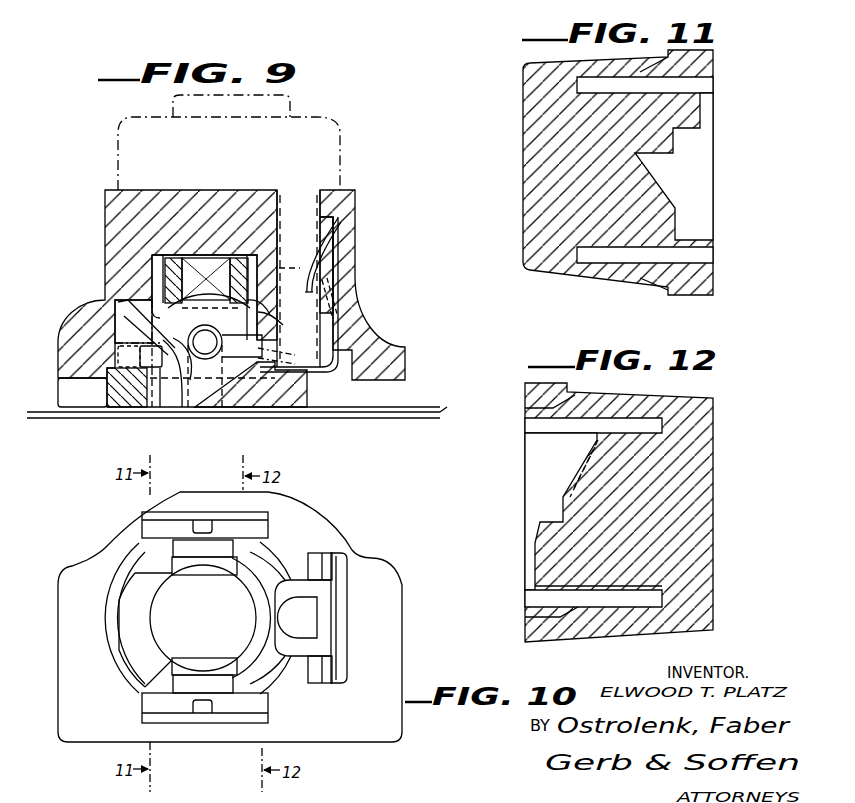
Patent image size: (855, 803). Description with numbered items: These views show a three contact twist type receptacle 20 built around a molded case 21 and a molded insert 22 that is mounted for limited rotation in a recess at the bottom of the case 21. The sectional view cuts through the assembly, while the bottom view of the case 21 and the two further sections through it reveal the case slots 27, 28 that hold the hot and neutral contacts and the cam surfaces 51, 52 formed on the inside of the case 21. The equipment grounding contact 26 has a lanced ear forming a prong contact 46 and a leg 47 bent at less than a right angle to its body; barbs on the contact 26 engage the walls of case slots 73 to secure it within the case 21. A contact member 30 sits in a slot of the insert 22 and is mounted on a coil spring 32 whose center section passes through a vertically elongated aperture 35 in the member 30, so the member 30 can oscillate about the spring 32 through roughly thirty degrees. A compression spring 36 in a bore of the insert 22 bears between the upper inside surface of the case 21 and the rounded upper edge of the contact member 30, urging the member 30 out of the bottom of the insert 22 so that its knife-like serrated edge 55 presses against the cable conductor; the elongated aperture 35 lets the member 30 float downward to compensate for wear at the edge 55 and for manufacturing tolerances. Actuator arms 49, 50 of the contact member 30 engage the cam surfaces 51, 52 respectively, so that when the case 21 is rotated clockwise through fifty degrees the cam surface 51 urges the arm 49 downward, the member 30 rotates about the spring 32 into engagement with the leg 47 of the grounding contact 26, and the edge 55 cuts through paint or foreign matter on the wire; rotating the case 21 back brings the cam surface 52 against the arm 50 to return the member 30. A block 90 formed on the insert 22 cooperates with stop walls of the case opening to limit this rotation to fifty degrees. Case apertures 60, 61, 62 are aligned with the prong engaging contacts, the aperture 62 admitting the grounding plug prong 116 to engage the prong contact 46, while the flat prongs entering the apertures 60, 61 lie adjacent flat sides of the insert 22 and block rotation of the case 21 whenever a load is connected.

In FIG. 9, the three contact twist type receptacle 20 is at (357, 241).
In FIG. 10, the three contact twist type receptacle 20 is at (366, 556).
In FIG. 11, the three contact twist type receptacle 20 is at (724, 203).
In FIG. 12, the three contact twist type receptacle 20 is at (729, 475).
In FIG. 9, the molded case 21 is at (357, 277).
In FIG. 10, the molded case 21 is at (383, 564).
In FIG. 11, the molded case 21 is at (713, 118).
In FIG. 12, the molded case 21 is at (713, 520).
In FIG. 9, the molded insert 22 is at (307, 398).
In FIG. 9, the equipment grounding contact 26 is at (332, 288).
In FIG. 11, the case slot 27 is at (625, 255).
In FIG. 12, the case slot 27 is at (598, 427).
In FIG. 11, the case slot 28 is at (630, 85).
In FIG. 12, the case slot 28 is at (540, 598).
In FIG. 9, the contact member 30 is at (328, 318).
In FIG. 9, the coil spring 32 is at (216, 337).
In FIG. 9, the vertically elongated aperture 35 is at (215, 354).
In FIG. 9, the compression spring 36 is at (213, 276).
In FIG. 9, the prong contact 46 is at (317, 272).
In FIG. 9, the leg 47 is at (282, 373).
In FIG. 9, the actuator arm 49 is at (270, 345).
In FIG. 9, the actuator arm 50 is at (139, 334).
In FIG. 9, the cam surface 51 is at (283, 324).
In FIG. 10, the cam surface 51 is at (262, 590).
In FIG. 12, the cam surface 51 is at (585, 465).
In FIG. 9, the cam surface 52 is at (118, 301).
In FIG. 10, the cam surface 52 is at (142, 638).
In FIG. 11, the cam surface 52 is at (682, 197).
In FIG. 9, the knife-like serrated edge 55 is at (203, 400).
In FIG. 10, the case aperture 60 is at (228, 643).
In FIG. 10, the case aperture 61 is at (195, 566).
In FIG. 10, the case aperture 62 is at (297, 625).
In FIG. 10, the case slots 73 is at (327, 541).
In FIG. 9, the block 90 is at (165, 365).
In FIG. 9, the plug prong 116 is at (306, 229).